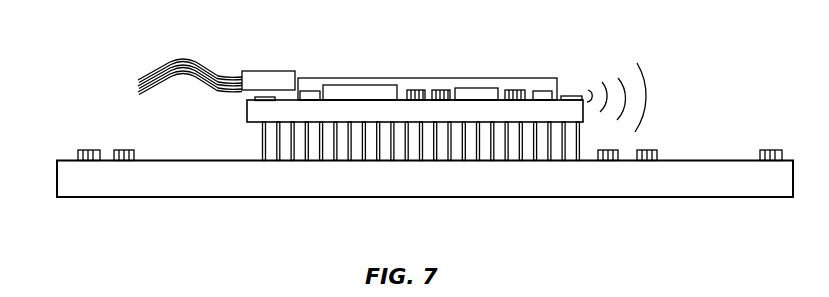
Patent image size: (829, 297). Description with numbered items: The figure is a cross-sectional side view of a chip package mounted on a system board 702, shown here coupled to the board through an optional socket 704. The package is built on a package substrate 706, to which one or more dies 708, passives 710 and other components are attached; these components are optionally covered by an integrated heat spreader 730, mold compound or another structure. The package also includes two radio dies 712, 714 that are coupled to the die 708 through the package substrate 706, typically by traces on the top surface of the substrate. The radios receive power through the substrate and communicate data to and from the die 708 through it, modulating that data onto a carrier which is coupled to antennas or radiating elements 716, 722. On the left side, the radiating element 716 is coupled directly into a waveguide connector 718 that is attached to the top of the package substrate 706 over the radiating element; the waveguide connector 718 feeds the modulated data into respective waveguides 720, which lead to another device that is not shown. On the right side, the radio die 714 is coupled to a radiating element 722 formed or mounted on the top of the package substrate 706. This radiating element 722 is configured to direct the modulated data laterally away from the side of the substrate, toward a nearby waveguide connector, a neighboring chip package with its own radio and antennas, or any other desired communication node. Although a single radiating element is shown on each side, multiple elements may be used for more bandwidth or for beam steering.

The system board 702 is at (553, 188).
The socket 704 is at (441, 153).
The package substrate 706 is at (259, 117).
The die 708 is at (379, 85).
The passives 710 is at (440, 90).
The radio die 712 is at (313, 91).
The radio die 714 is at (545, 91).
The radiating element 716 is at (253, 99).
The waveguide connector 718 is at (278, 71).
The waveguides 720 is at (172, 60).
The radiating element 722 is at (573, 96).
The integrated heat spreader 730 is at (497, 78).